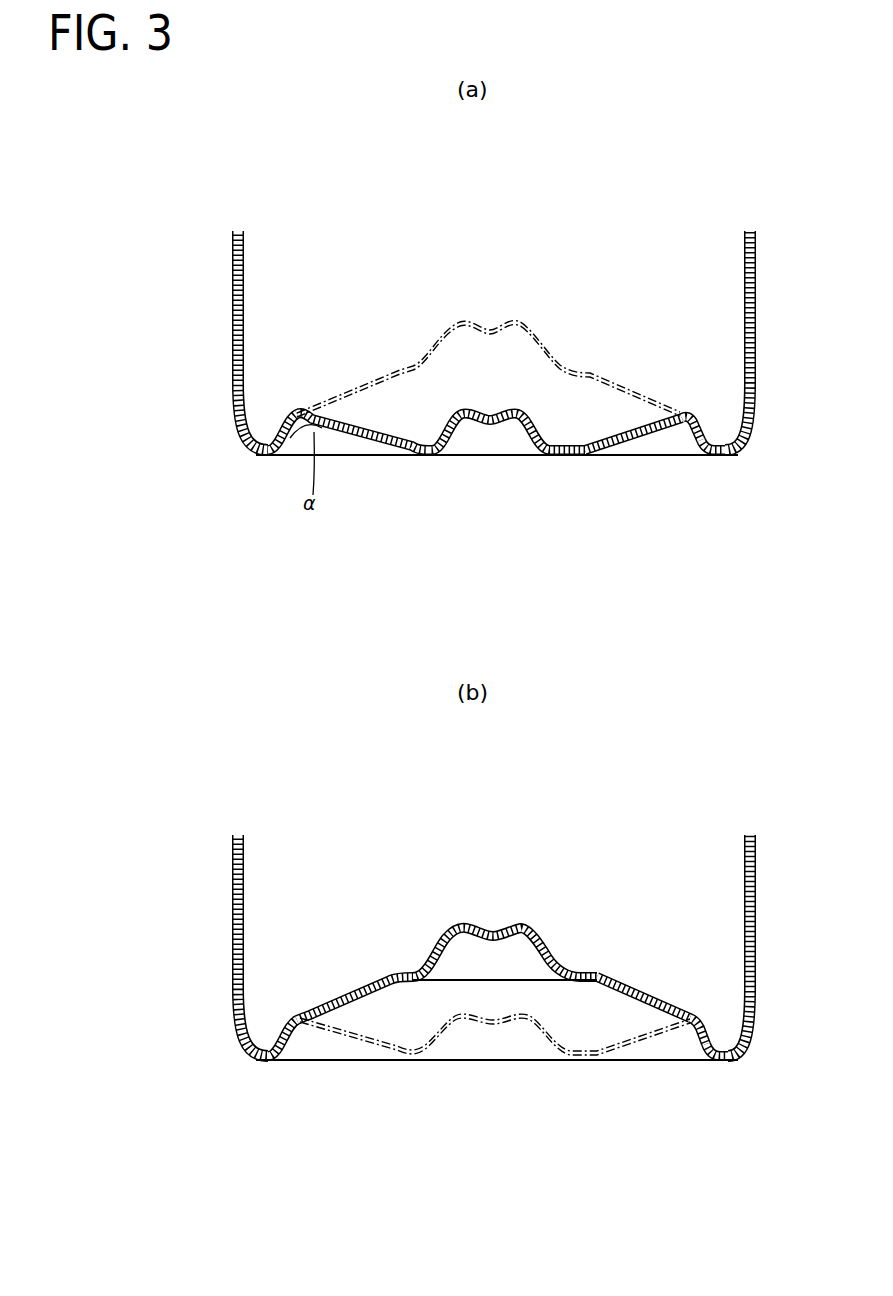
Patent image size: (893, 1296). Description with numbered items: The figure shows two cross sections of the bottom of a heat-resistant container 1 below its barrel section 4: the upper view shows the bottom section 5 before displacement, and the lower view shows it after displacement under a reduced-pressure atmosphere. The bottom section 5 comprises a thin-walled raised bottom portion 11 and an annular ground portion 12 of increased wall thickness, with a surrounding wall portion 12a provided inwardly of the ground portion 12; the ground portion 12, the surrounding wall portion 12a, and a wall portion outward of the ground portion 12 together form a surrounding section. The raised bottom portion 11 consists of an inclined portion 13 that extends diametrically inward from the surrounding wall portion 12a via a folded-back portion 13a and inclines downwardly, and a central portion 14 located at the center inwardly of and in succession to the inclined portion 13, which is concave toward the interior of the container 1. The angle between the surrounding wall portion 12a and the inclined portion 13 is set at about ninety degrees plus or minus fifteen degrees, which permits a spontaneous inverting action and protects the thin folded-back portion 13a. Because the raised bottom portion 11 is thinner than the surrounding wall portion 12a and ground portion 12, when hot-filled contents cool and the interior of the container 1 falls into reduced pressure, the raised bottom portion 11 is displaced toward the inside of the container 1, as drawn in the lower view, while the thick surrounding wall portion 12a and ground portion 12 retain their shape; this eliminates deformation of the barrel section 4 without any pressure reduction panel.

The heat-resistant container 1 is at (454, 591).
The barrel section 4 is at (232, 292).
The bottom section 5 is at (436, 473).
The raised bottom portion 11 is at (553, 453).
The ground portion 12 is at (262, 455).
The surrounding wall portion 12a is at (693, 455).
The inclined portion 13 is at (353, 455).
The folded-back portion 13a is at (687, 420).
The central portion 14 is at (512, 422).